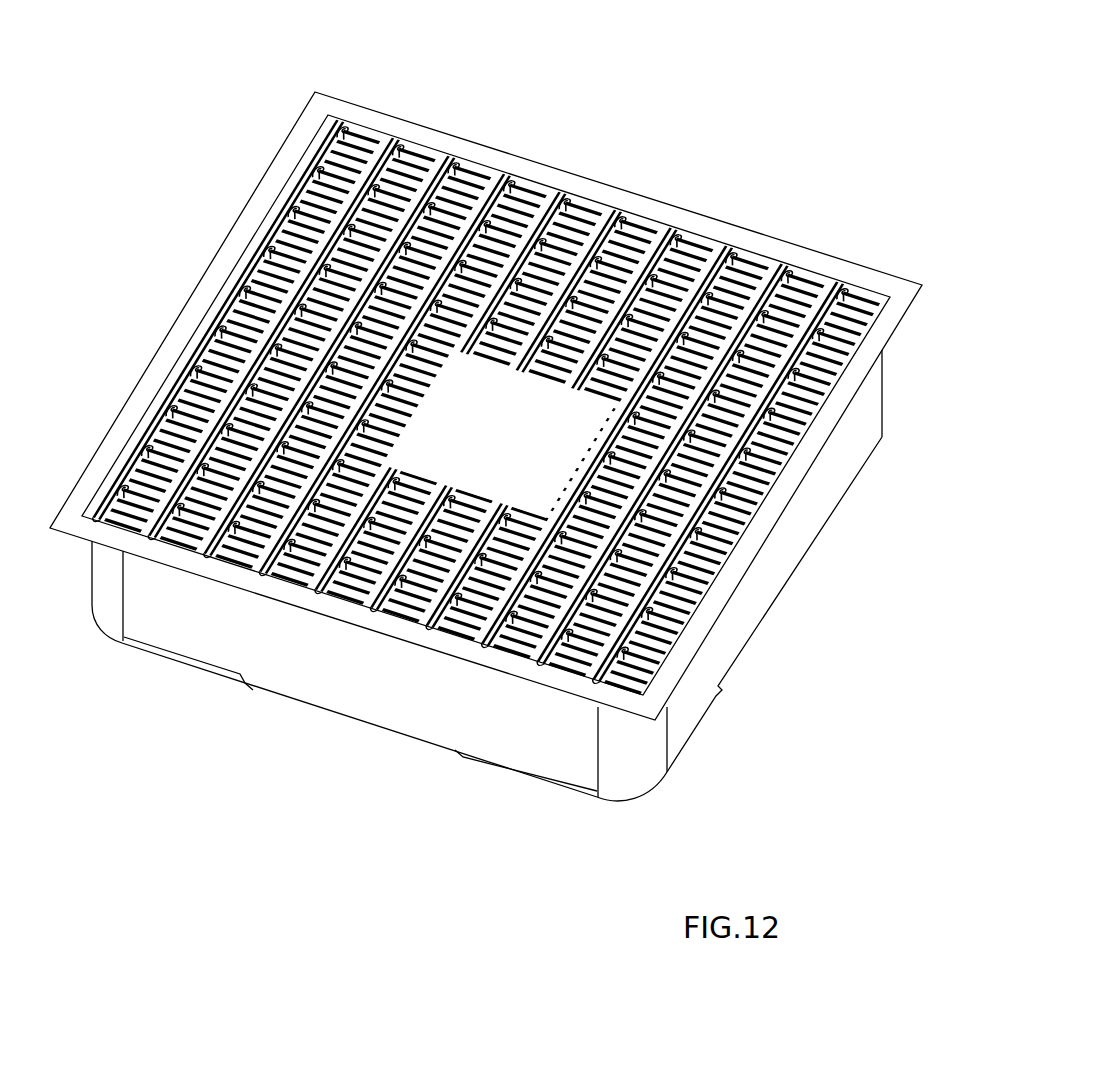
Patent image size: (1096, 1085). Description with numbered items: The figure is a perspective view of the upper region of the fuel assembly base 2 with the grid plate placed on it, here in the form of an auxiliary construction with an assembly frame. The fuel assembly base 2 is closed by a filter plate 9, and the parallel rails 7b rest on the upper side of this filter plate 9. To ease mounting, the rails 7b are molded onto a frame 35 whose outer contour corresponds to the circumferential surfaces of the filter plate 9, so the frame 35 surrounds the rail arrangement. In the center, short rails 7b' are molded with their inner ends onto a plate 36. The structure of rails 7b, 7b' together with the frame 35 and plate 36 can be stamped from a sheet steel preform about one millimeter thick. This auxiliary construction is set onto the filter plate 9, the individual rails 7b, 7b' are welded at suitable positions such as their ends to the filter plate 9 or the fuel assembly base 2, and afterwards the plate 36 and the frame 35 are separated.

The fuel assembly base 2 is at (518, 760).
The frame 35 is at (368, 615).
The filter plate 9 is at (262, 545).
The rails 7b is at (508, 343).
The short rails 7b' is at (541, 355).
The plate 36 is at (498, 447).